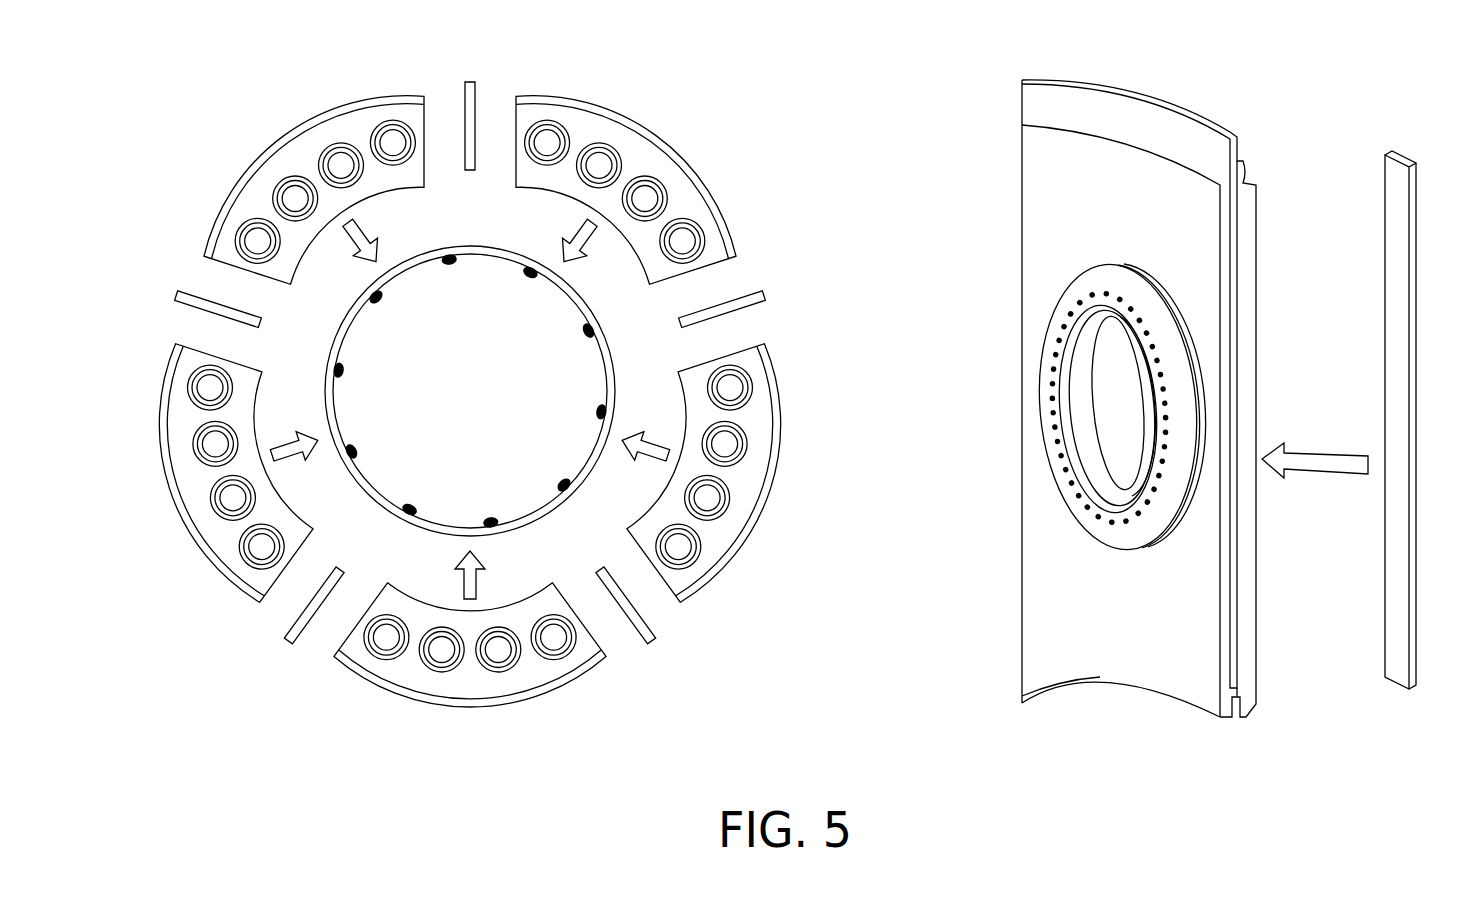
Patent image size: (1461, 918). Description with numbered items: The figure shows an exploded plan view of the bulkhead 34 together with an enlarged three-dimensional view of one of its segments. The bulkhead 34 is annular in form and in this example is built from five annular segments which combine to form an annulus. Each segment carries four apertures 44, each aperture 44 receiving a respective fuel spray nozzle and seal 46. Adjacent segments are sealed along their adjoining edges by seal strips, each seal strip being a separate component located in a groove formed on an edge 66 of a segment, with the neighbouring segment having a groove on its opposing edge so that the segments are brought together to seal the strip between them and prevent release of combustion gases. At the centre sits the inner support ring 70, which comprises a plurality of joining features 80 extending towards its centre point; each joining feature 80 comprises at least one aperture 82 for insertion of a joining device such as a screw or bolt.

The bulkhead 34 is at (172, 98).
The aperture 44 is at (386, 122).
The fuel spray nozzle and seal 46 is at (1046, 357).
The edge 66 is at (1256, 203).
The inner support ring 70 is at (336, 337).
The joining feature 80 is at (380, 297).
The aperture 82 is at (385, 295).